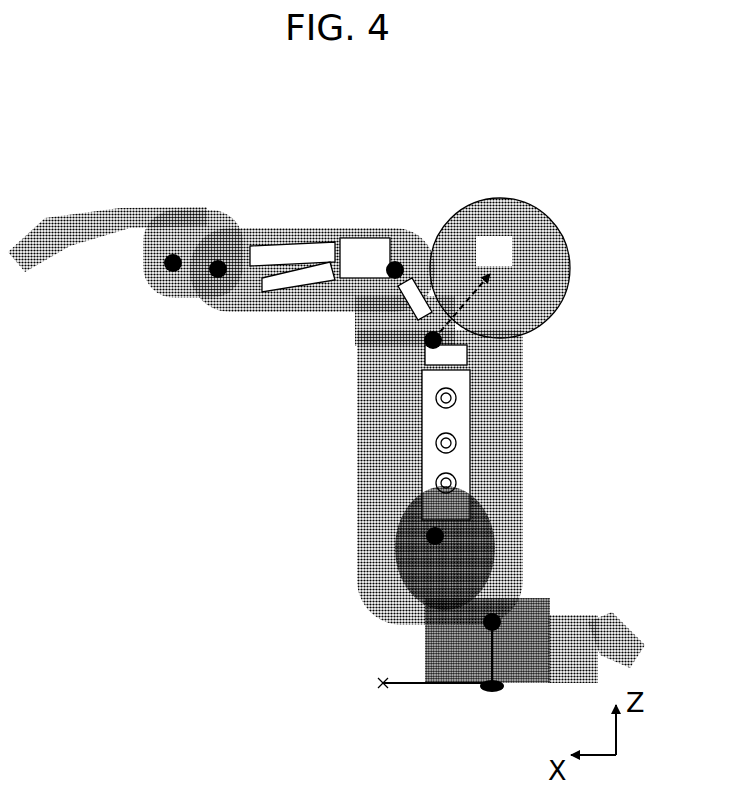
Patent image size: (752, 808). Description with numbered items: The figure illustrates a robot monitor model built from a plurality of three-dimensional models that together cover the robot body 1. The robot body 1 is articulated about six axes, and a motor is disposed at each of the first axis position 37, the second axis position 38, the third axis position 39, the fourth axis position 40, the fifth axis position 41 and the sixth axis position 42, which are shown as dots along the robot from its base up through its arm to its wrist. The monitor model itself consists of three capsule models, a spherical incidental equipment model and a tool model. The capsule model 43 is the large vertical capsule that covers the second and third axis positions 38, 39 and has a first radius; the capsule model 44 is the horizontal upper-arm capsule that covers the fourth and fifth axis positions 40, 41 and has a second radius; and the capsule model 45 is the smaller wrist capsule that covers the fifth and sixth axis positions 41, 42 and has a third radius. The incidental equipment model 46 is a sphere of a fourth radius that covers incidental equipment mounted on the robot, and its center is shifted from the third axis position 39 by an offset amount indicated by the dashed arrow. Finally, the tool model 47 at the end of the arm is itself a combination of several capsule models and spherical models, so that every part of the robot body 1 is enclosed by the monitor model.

The robot body 1 is at (465, 455).
The first axis position 37 is at (492, 622).
The second axis position 38 is at (435, 536).
The third axis position 39 is at (433, 340).
The fourth axis position 40 is at (395, 270).
The fifth axis position 41 is at (218, 269).
The sixth axis position 42 is at (173, 263).
The capsule model 43 is at (362, 487).
The capsule model 44 is at (318, 236).
The capsule model 45 is at (185, 284).
The incidental equipment model 46 is at (532, 218).
The tool model 47 is at (90, 213).